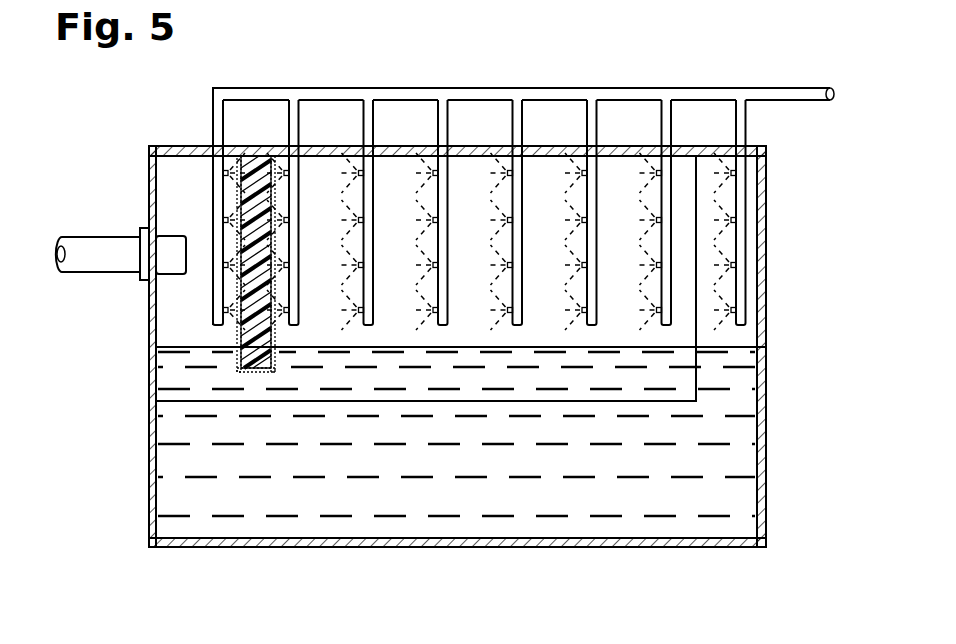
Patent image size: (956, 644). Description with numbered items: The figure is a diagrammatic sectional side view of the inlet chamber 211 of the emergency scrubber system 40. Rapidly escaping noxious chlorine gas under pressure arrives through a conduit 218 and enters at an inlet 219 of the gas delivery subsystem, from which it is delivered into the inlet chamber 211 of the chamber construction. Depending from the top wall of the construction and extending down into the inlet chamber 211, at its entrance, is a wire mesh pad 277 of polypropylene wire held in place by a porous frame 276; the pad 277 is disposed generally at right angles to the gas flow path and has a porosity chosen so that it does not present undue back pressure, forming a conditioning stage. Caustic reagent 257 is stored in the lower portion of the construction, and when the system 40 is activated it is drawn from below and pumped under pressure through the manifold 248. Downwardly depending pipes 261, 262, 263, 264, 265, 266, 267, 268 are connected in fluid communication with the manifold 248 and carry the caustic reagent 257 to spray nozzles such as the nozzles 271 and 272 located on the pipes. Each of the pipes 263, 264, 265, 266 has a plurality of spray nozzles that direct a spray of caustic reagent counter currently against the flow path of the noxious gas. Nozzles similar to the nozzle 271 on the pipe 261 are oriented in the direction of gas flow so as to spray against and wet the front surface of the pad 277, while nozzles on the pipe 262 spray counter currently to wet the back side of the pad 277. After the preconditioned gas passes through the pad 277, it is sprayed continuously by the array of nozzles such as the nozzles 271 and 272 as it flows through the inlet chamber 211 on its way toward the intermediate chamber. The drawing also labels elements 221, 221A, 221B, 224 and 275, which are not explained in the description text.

The system 40 is at (128, 543).
The inlet chamber 211 is at (170, 288).
The conduit 218 is at (92, 237).
The inlet 219 is at (172, 236).
The tank 221 is at (148, 154).
The tank side wall 221A is at (766, 502).
The tank bottom wall 221B is at (672, 549).
The tank end wall 224 is at (752, 200).
The manifold 248 is at (242, 88).
The caustic reagent 257 is at (172, 455).
The pipe 261 is at (213, 118).
The pipe 262 is at (297, 115).
The pipe 263 is at (363, 112).
The pipe 264 is at (442, 112).
The pipe 265 is at (517, 112).
The pipe 266 is at (591, 112).
The pipe 267 is at (664, 118).
The pipe 268 is at (745, 125).
The spray nozzle 271 is at (436, 268).
The spray nozzle 272 is at (507, 266).
The filter element 275 is at (237, 285).
The porous frame 276 is at (240, 355).
The wire mesh pad 277 is at (234, 372).